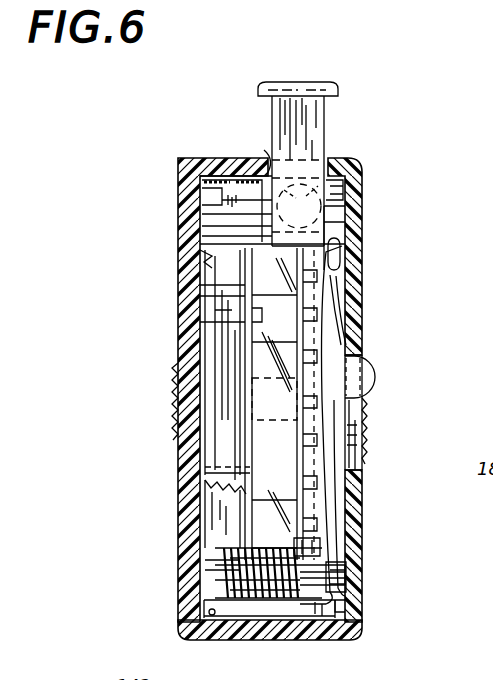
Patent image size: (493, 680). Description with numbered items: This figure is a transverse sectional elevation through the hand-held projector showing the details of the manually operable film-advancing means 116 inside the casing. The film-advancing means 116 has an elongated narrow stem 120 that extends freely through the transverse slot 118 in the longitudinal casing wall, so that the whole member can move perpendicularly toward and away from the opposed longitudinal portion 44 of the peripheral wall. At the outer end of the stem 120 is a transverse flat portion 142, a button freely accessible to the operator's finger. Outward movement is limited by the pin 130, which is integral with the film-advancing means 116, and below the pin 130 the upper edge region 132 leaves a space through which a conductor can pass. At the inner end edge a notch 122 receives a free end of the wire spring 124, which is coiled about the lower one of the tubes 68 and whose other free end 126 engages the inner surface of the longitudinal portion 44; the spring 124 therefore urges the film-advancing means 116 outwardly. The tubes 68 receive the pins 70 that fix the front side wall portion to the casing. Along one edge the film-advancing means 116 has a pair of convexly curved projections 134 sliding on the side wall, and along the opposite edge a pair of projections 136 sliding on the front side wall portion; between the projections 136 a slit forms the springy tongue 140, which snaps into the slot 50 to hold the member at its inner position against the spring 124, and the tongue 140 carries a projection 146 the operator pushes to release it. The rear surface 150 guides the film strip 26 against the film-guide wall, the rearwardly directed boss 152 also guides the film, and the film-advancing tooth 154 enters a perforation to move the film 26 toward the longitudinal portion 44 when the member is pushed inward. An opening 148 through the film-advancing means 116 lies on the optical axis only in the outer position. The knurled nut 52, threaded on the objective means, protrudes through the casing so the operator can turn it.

The film-advancing means 116 is at (362, 118).
The transverse flat portion 142 is at (338, 92).
The stem 120 is at (282, 114).
The transverse slot 118 is at (270, 158).
The pin 130 is at (363, 192).
The upper edge region 132 is at (346, 214).
The projections 136 is at (346, 236).
The boss 152 is at (340, 252).
The film-advancing tooth 154 is at (346, 282).
The springy tongue 140 is at (340, 306).
The projection 146 is at (372, 389).
The slot 50 is at (352, 459).
The notch 122 is at (320, 536).
The wire spring 124 is at (318, 548).
The pins 70 is at (348, 594).
The tubes 68 is at (200, 218).
The convexly curved projections 134 is at (200, 286).
The rear surface 150 is at (216, 356).
The knurled nut 52 is at (174, 390).
The film strip 26 is at (276, 250).
The opening 148 is at (278, 413).
The free end 126 is at (236, 641).
The longitudinal portion 44 is at (322, 641).